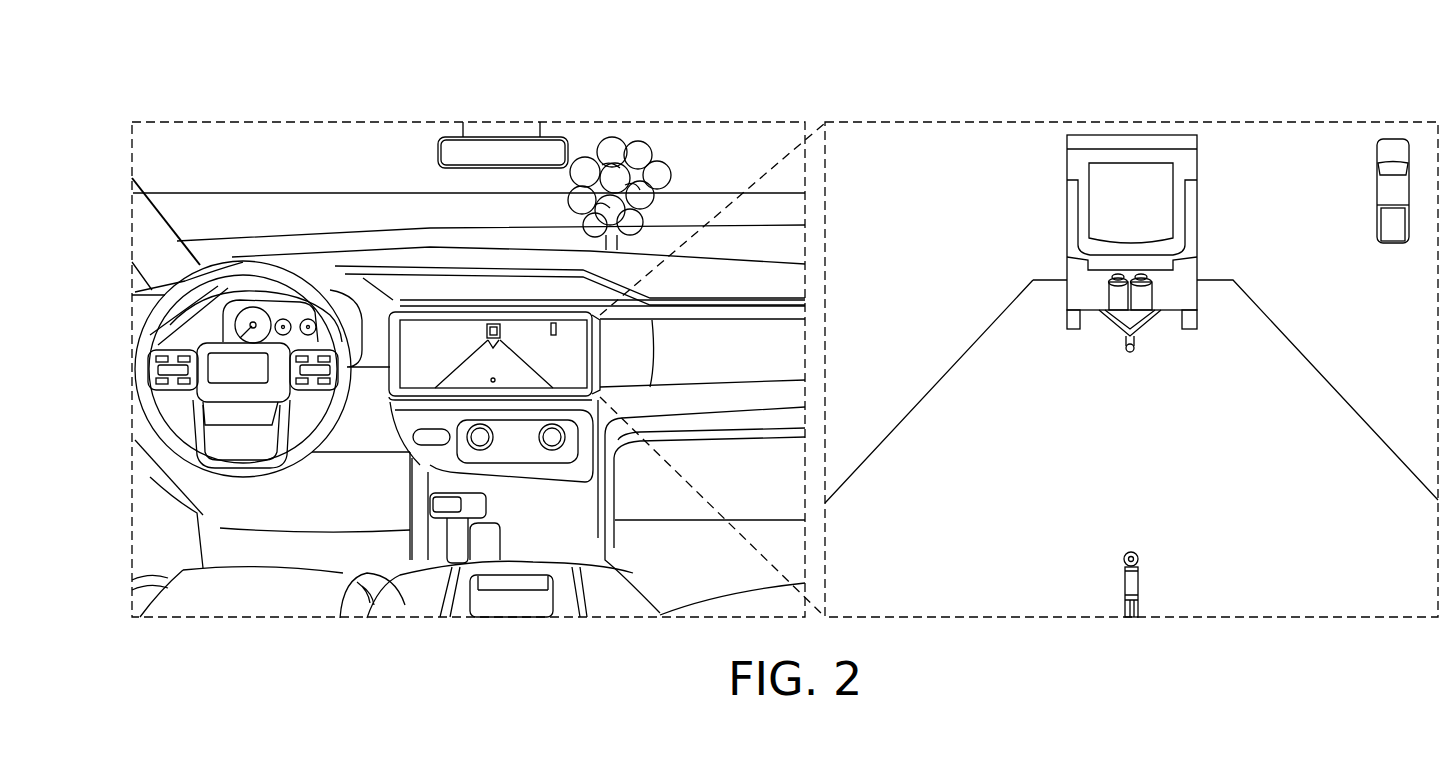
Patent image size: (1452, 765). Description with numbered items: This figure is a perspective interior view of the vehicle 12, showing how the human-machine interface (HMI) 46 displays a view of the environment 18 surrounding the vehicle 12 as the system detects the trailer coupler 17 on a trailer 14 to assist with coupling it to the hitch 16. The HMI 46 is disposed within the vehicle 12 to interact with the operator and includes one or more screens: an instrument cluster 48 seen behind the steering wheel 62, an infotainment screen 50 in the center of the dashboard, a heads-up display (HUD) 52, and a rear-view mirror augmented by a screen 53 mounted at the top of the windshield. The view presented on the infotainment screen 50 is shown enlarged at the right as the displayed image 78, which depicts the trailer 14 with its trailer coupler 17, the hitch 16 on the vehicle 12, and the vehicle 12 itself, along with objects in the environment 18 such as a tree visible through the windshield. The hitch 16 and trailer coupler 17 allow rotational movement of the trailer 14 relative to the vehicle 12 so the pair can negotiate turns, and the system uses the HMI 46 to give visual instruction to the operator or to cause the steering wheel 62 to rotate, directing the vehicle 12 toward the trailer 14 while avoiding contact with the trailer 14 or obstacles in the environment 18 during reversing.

The vehicle 12 is at (1388, 188).
The trailer 14 is at (1197, 208).
The hitch 16 is at (1133, 553).
The trailer coupler 17 is at (1131, 352).
The environment 18 is at (635, 138).
The human-machine interface (HMI) 46 is at (470, 227).
The infotainment screen 50 is at (458, 333).
The instrument cluster 48 is at (342, 297).
The heads-up display (HUD) 52 is at (242, 230).
The rear-view mirror augmented by a screen 53 is at (500, 148).
The steering wheel 62 is at (222, 275).
The camera image 78 is at (603, 352).